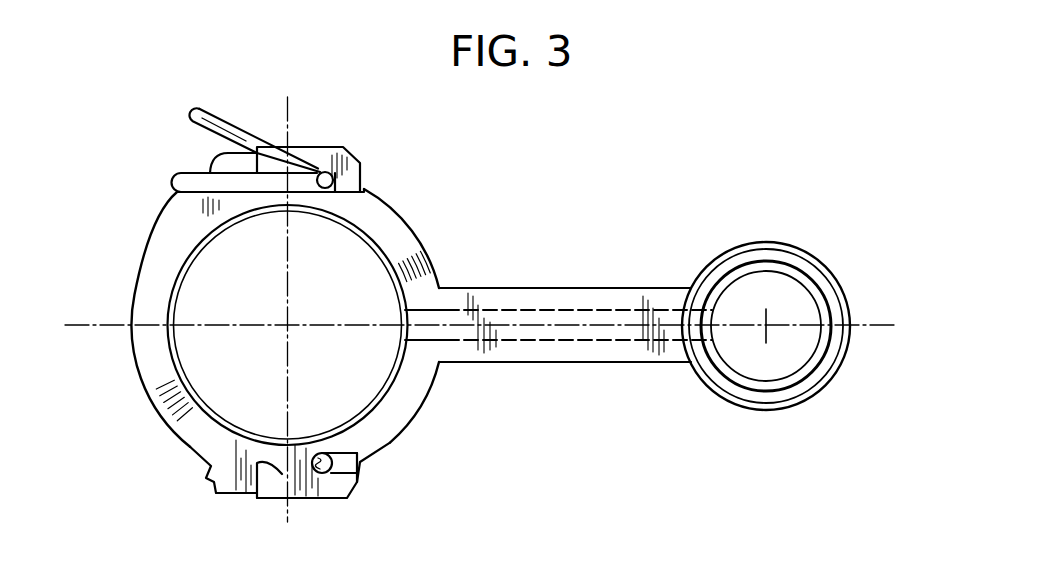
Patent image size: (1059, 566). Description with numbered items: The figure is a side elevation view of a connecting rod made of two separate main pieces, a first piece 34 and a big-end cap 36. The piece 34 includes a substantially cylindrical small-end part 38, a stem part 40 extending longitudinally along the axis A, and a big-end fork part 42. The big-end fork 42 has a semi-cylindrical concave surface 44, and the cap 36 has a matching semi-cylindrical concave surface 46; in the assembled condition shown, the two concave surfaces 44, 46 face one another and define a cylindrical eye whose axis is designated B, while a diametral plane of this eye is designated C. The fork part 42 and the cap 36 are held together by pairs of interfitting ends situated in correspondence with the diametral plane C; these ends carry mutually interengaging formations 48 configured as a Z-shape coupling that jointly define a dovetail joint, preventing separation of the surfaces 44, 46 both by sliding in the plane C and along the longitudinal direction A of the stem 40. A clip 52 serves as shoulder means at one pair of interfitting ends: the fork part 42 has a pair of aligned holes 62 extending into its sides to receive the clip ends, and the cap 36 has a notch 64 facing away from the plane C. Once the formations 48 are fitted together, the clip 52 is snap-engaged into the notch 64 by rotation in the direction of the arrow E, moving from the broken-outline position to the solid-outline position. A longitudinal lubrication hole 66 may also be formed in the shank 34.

The first main piece 34 is at (671, 262).
The big-end cap 36 is at (135, 393).
The small-end part 38 is at (793, 263).
The stem part 40 is at (583, 292).
The big-end fork part 42 is at (428, 225).
The semi-cylindrical concave surface 44 is at (388, 378).
The semi-cylindrical concave surface 46 is at (163, 298).
The interengaging formations 48 is at (232, 111).
The clip 52 is at (182, 174).
The aligned holes 62 is at (325, 475).
The notch 64 is at (206, 180).
The longitudinal lubrication hole 66 is at (512, 316).
The longitudinal axis A is at (568, 332).
The eye axis B is at (283, 328).
The diametral plane C is at (290, 296).
The arrow E is at (180, 97).